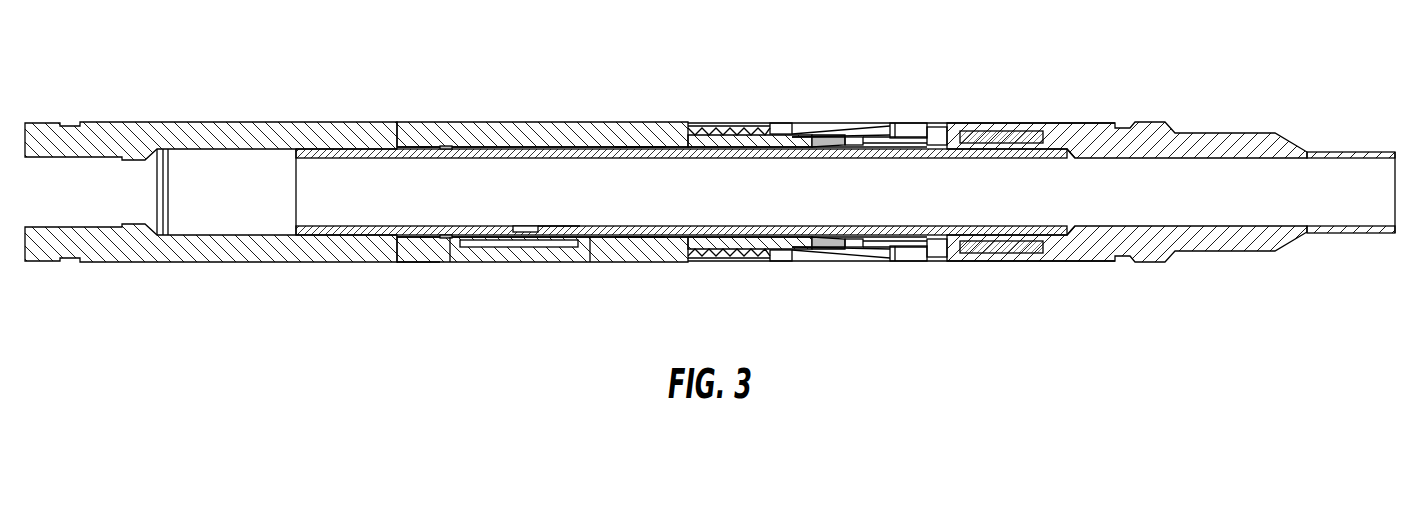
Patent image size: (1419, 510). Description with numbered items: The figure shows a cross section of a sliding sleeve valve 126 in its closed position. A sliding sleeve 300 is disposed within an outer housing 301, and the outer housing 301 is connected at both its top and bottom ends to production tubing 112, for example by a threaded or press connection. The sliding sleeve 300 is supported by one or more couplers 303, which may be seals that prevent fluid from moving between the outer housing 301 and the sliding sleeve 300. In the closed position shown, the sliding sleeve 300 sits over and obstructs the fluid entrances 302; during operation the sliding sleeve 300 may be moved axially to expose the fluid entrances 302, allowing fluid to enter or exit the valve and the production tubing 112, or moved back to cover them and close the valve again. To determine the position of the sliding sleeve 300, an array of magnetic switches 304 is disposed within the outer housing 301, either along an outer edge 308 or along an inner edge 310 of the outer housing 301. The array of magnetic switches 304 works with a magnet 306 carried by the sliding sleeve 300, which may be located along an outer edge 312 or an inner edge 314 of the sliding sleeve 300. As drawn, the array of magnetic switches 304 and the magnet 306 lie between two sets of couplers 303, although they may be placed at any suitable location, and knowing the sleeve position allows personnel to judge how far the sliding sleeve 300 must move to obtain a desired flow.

The sliding sleeve valve 126 is at (1140, 60).
The production tubing 112 is at (97, 122).
The sliding sleeve 300 is at (575, 150).
The outer housing 301 is at (472, 122).
The fluid entrances 302 is at (942, 140).
The coupler 303 is at (424, 148).
The array of magnetic switches 304 is at (590, 245).
The magnet 306 is at (533, 226).
The outer edge of outer housing 308 is at (410, 263).
The inner edge of outer housing 310 is at (460, 243).
The outer edge of sliding sleeve 312 is at (572, 250).
The inner edge of sliding sleeve 314 is at (557, 231).